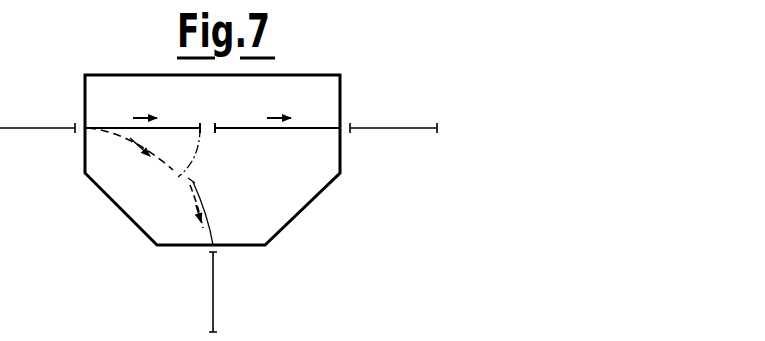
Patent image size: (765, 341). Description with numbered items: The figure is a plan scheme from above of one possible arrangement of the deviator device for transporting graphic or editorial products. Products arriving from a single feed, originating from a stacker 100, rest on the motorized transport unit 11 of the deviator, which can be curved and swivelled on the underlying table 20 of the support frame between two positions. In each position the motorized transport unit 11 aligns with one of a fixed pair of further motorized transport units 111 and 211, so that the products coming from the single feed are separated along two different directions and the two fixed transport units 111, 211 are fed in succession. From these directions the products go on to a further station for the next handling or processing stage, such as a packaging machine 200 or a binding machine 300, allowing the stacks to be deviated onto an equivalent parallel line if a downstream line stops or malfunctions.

The table 20 is at (274, 188).
The stacker 100 is at (15, 125).
The motorized transport unit 11 is at (114, 120).
The further motorized transport unit 211 is at (324, 122).
The further motorized transport unit 111 is at (222, 228).
The packaging machine 200 is at (395, 128).
The binding machine 300 is at (213, 292).